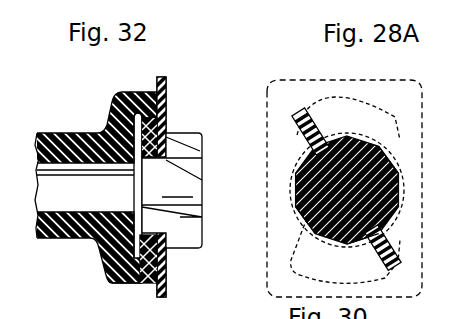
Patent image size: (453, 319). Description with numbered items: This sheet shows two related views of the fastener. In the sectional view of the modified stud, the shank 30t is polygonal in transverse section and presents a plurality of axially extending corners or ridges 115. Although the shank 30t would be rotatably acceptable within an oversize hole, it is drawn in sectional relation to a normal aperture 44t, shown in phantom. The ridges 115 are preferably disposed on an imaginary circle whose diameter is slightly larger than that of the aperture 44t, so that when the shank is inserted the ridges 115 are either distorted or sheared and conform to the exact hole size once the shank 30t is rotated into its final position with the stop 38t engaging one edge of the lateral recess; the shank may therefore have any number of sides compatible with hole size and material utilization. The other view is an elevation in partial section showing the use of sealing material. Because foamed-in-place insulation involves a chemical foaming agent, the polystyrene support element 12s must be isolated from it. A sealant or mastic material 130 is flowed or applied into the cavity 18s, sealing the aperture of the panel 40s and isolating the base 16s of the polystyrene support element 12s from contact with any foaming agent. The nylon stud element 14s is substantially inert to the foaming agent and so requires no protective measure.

In FIG. 32, the polystyrene support element 12s is at (55, 251).
In FIG. 32, the stud element 14s is at (208, 188).
In FIG. 32, the base 16s is at (133, 283).
In FIG. 32, the cavity 18s is at (152, 100).
In FIG. 32, the panel 40s is at (170, 287).
In FIG. 32, the sealant or mastic material 130 is at (168, 124).
In FIG. 28A, the shank 30t is at (360, 137).
In FIG. 28A, the stop 38t is at (298, 128).
In FIG. 28A, the normal aperture 44t is at (293, 172).
In FIG. 28A, the ridges 115 is at (399, 170).